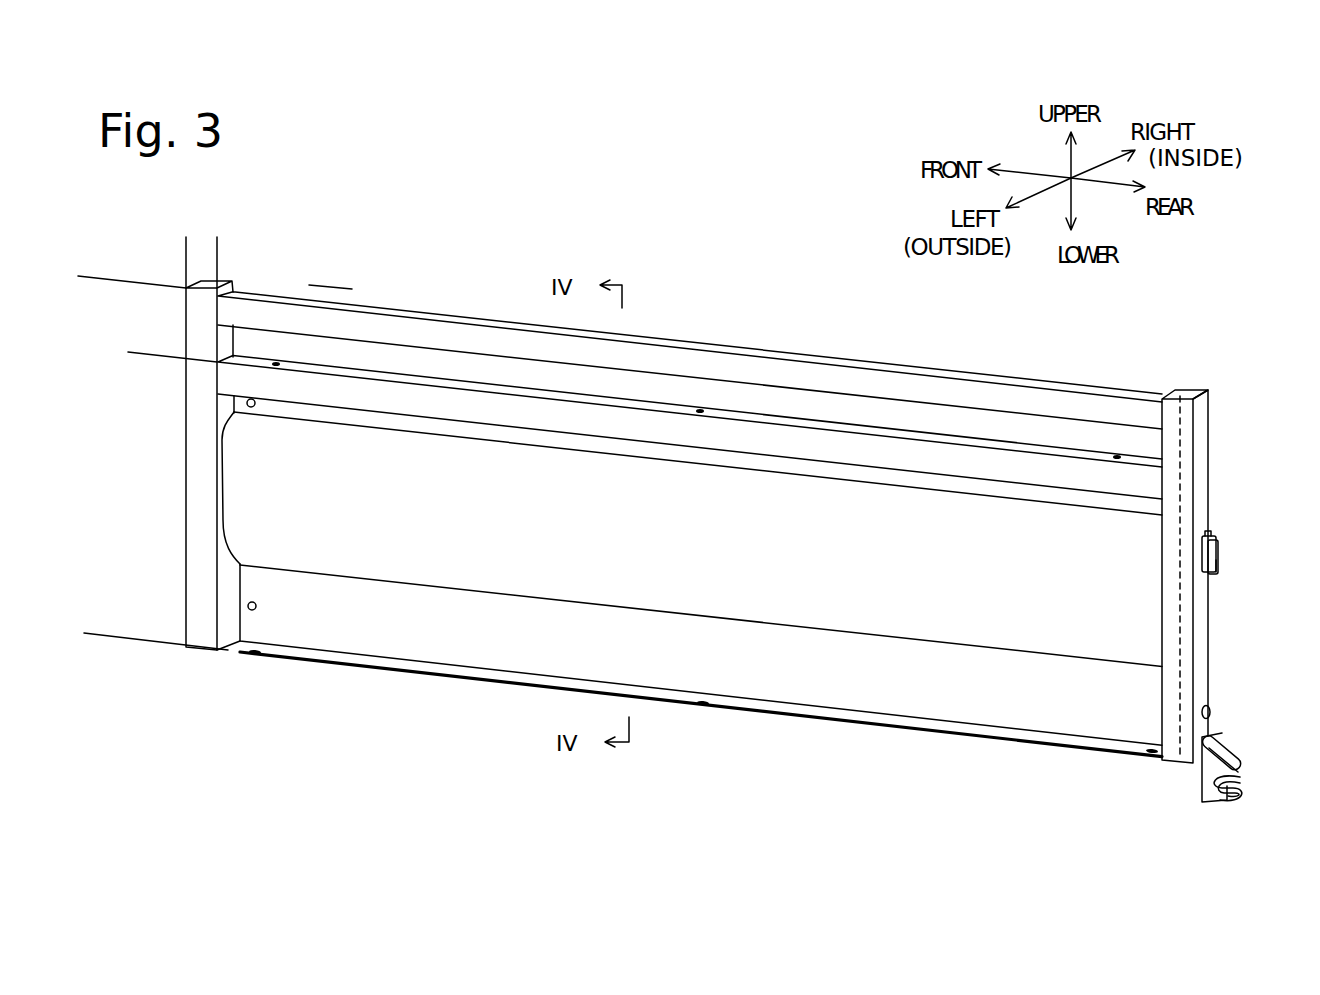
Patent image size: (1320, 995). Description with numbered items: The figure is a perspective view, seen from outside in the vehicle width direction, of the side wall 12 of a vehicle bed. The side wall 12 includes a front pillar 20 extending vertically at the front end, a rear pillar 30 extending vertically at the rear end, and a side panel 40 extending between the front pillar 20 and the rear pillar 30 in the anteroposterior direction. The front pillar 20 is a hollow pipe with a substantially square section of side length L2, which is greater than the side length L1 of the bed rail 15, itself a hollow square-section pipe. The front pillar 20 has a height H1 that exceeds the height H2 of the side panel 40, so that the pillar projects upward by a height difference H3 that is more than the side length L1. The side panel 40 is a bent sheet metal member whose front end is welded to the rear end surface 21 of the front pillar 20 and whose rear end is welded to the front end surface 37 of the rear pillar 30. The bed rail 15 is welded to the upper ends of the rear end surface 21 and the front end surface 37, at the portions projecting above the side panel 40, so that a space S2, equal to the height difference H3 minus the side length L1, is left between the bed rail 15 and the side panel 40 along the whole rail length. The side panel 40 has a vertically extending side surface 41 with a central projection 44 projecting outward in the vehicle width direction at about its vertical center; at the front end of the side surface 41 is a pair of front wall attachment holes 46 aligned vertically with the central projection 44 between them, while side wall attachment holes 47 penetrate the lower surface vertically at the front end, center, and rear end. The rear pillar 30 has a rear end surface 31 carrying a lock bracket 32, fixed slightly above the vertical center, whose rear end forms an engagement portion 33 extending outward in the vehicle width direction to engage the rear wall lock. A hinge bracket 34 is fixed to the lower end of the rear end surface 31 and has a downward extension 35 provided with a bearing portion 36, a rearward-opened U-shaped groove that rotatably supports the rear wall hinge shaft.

The side wall 12 is at (683, 306).
The bed rail 15 is at (987, 375).
The front pillar 20 is at (207, 650).
The rear end surface 21 is at (247, 628).
The rear pillar 30 is at (1173, 392).
The rear end surface 31 is at (1200, 413).
The lock bracket 32 is at (1209, 534).
The engagement portion 33 is at (1218, 568).
The hinge bracket 34 is at (1237, 748).
The downward extension 35 is at (1202, 795).
The bearing portion 36 is at (1240, 790).
The front end surface 37 is at (1160, 538).
The side panel 40 is at (985, 682).
The side surface 41 is at (450, 437).
The central projection 44 is at (393, 488).
The front wall attachment holes 46 is at (253, 408).
The side wall attachment holes 47 is at (262, 655).
The space S2 is at (738, 388).
The height H1 is at (90, 278).
The height H2 is at (138, 357).
The height difference H3 is at (138, 285).
The side length L1 is at (313, 347).
The side length L2 is at (227, 252).